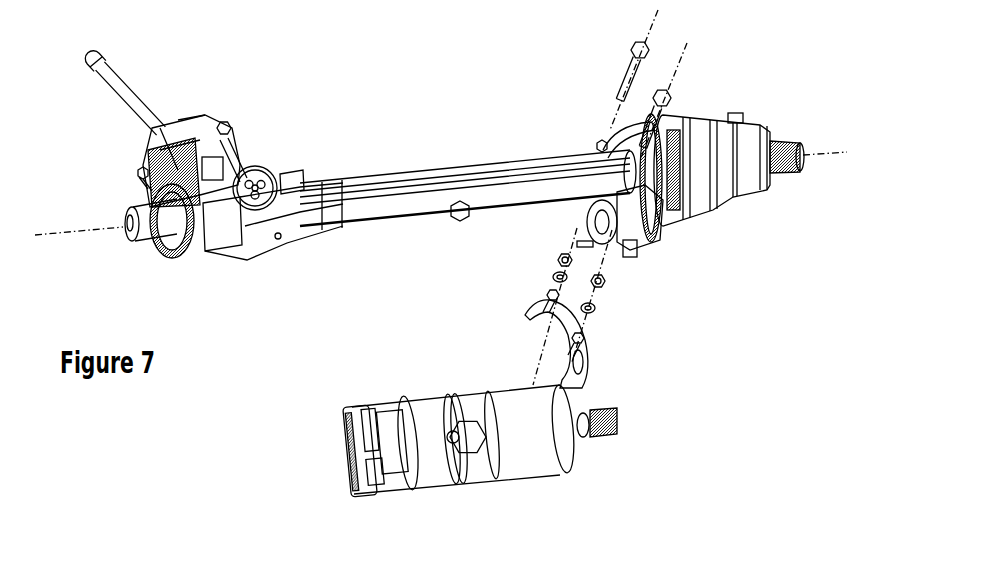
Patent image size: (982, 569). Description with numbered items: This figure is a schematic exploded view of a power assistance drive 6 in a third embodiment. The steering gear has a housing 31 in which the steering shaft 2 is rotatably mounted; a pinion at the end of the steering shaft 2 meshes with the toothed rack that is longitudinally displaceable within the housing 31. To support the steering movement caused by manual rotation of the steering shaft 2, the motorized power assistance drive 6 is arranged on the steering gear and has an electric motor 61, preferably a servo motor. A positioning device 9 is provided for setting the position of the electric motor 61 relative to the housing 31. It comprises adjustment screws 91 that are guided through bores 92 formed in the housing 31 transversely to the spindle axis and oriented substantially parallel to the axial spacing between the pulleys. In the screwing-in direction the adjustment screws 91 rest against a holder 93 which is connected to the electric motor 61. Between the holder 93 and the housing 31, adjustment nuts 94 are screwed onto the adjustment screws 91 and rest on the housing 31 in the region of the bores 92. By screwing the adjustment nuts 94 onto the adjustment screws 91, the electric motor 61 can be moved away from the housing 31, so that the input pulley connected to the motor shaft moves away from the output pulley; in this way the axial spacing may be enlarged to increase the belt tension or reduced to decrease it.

The steering shaft 2 is at (127, 97).
The power assistance drive 6 is at (374, 107).
The housing 31 is at (456, 175).
The adjustment screws 91 is at (620, 80).
The bores 92 is at (598, 140).
The positioning device 9 is at (669, 299).
The holder 93 is at (582, 377).
The adjustment nuts 94 is at (558, 262).
The electric motor 61 is at (530, 453).